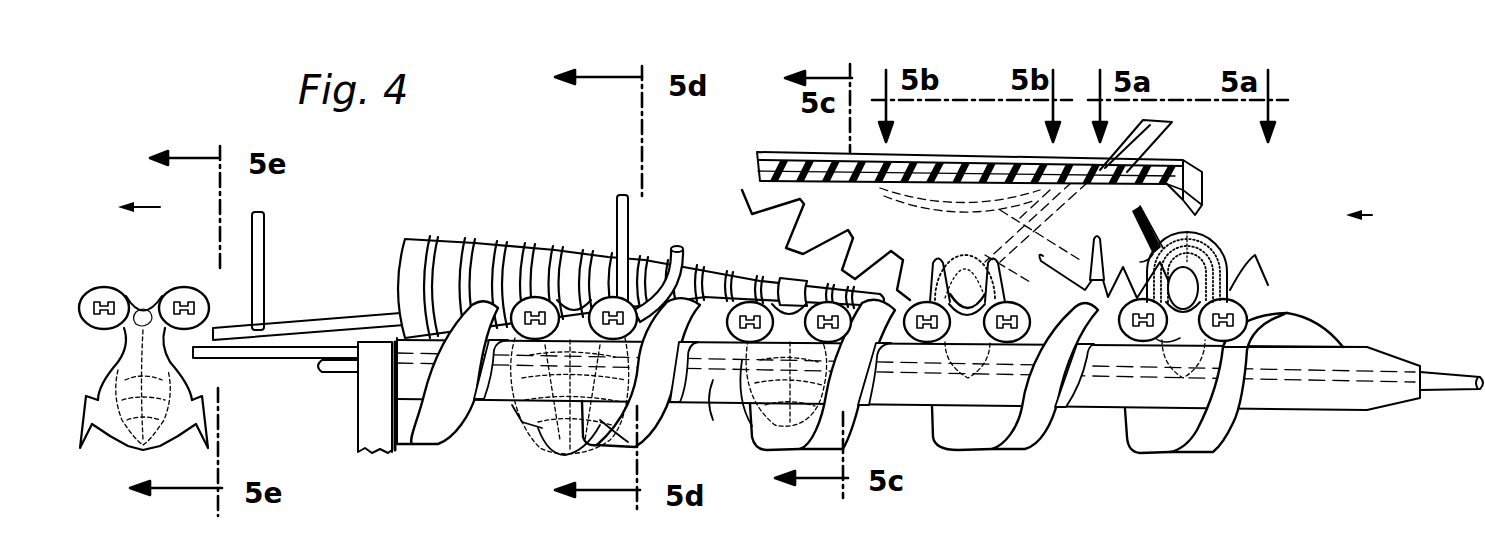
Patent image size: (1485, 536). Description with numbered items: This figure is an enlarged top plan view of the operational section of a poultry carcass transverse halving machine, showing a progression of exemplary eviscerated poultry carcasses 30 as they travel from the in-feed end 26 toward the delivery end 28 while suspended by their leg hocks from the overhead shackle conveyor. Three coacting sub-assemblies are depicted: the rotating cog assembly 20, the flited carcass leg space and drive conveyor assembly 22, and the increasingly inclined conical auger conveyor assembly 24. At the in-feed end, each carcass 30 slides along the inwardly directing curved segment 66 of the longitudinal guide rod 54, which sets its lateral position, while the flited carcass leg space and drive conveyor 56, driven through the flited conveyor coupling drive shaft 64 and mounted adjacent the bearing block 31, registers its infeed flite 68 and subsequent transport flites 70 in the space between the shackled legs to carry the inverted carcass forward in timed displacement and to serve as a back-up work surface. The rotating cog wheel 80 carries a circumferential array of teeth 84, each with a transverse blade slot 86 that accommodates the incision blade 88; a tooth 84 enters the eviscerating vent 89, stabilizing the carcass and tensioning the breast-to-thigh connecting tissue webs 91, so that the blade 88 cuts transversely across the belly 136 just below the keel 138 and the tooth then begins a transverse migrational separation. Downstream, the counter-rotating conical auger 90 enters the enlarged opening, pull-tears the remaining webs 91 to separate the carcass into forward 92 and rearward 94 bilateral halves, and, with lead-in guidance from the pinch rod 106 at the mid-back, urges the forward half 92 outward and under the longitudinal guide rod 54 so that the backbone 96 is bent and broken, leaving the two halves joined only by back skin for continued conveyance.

The rotating cog assembly 20 is at (985, 135).
The flited carcass leg space and drive conveyor assembly 22 is at (972, 478).
The increasingly inclined conical auger conveyor assembly 24 is at (483, 218).
The in-feed end 26 is at (1375, 214).
The delivery end 28 is at (155, 206).
The poultry carcass 30 is at (125, 262).
The bearing block 31 is at (366, 430).
The longitudinal guide rod 54 is at (283, 358).
The flited carcass leg space and drive conveyor 56 is at (1105, 408).
The flited conveyor coupling drive shaft 64 is at (346, 373).
The inwardly directing curved segment 66 is at (1458, 395).
The infeed flite 68 is at (1290, 326).
The transport flites 70 is at (440, 448).
The rotating cog wheel 80 is at (861, 208).
The teeth 84 is at (765, 205).
The transverse blade slot 86 is at (805, 160).
The incision blade 88 is at (1150, 135).
The eviscerating vent 89 is at (1003, 292).
The conical auger 90 is at (550, 246).
The breast-to-thigh transverse carcass bilateral connecting tissue webs 91 is at (1148, 258).
The forward bilateral half 92 is at (176, 292).
The rearward bilateral half 94 is at (112, 434).
The backbone 96 is at (145, 455).
The pinch rod 106 is at (348, 322).
The belly 136 is at (1018, 257).
The keel 138 is at (962, 214).